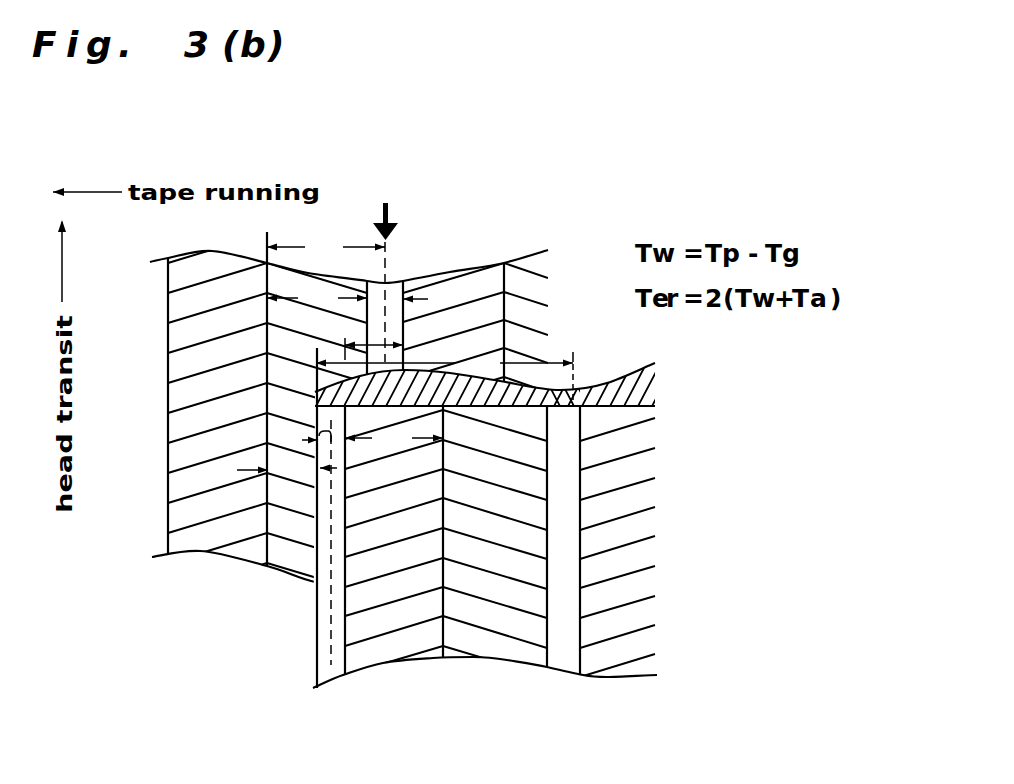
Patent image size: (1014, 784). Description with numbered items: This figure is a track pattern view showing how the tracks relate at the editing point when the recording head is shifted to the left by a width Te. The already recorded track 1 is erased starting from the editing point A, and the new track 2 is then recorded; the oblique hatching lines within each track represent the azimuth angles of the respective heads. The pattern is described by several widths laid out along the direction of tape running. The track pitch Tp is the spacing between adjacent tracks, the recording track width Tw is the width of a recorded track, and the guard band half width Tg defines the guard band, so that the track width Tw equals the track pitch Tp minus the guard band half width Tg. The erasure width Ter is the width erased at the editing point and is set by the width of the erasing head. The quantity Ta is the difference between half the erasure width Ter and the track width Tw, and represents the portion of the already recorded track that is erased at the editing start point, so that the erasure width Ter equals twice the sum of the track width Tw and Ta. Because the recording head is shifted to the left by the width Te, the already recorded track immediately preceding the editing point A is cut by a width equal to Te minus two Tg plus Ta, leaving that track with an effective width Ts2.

The already recorded track 1 is at (190, 257).
The track 2 is at (507, 660).
The editing point A is at (385, 261).
The track pitch Tp is at (326, 250).
The recording track width Tw is at (355, 369).
The guard band half width Tg is at (441, 302).
The shift width of the recording head Te is at (393, 350).
The erasure width Ter is at (444, 377).
The difference between half the erasure width and the track width Ta is at (303, 436).
The effective width of the track Ts2 is at (287, 480).